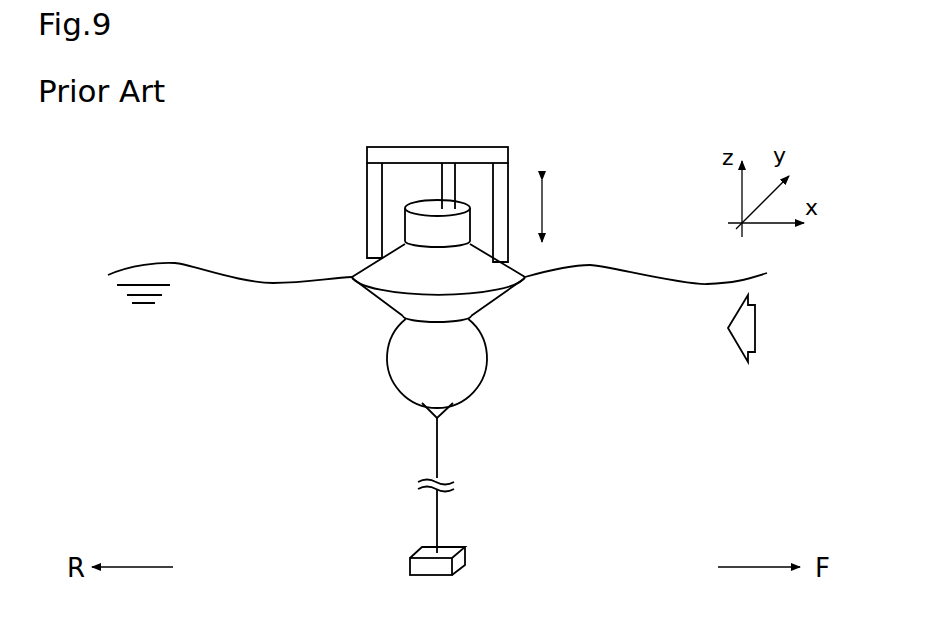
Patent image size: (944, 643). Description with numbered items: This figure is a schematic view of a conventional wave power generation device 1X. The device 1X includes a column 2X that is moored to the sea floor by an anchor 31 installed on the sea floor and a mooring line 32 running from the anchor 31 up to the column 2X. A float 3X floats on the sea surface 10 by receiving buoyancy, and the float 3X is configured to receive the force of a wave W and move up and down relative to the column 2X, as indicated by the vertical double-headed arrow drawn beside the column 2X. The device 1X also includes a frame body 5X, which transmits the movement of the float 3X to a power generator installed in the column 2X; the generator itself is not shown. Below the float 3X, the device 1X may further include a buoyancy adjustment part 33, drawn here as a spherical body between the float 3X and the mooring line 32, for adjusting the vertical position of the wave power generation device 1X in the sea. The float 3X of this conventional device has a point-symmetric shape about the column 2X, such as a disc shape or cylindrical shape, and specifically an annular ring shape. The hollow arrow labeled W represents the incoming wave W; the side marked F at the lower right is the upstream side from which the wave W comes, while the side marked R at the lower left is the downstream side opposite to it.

The wave power generation device 1X is at (152, 201).
The column 2X is at (418, 203).
The frame body 5X is at (373, 245).
The float 3X is at (505, 280).
The sea surface 10 is at (258, 282).
The buoyancy adjustment part 33 is at (396, 376).
The mooring line 32 is at (436, 447).
The anchor 31 is at (415, 558).
The wave W is at (742, 347).